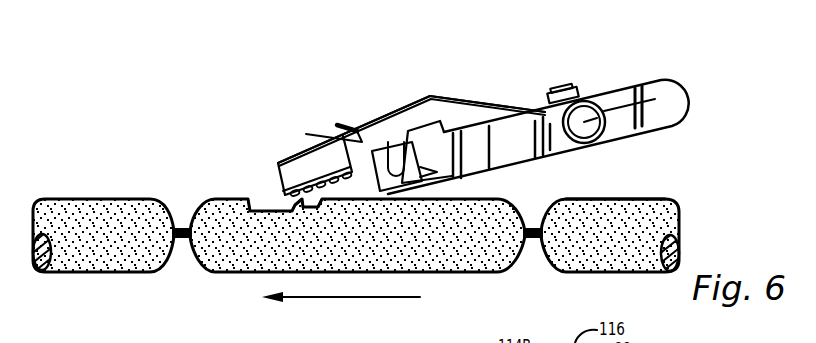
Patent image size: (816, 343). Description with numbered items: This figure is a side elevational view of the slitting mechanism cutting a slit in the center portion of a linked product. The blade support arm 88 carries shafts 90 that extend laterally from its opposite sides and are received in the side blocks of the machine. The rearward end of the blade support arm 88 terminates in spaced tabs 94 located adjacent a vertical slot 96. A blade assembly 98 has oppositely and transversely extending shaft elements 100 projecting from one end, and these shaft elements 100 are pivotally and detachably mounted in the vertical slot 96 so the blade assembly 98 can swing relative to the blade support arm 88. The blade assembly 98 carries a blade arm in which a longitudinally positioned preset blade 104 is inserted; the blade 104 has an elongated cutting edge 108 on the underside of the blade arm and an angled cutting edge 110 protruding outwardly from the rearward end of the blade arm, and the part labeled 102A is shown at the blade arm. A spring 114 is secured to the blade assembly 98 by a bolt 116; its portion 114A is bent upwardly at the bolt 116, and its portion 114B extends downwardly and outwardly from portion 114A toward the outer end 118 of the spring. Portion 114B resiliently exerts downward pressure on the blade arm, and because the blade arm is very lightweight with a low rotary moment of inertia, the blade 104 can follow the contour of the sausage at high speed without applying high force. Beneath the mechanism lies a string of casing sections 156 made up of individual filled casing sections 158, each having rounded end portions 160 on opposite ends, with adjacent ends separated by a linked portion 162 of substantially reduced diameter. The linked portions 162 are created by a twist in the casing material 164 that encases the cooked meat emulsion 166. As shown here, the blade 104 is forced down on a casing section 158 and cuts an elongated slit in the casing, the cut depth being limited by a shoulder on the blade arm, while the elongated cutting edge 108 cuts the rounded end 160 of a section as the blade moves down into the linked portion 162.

The blade support arm 88 is at (592, 86).
The shafts 90 is at (640, 95).
The spaced tabs 94 is at (305, 136).
The vertical slot 96 is at (384, 142).
The blade assembly 98 is at (274, 176).
The shaft elements 100 is at (393, 150).
The latch finger 102A is at (362, 126).
The preset blade 104 is at (273, 168).
The elongated cutting edge 108 is at (323, 177).
The angled cutting edge 110 is at (217, 198).
The spring 114 is at (446, 98).
The spring portion 114A is at (495, 104).
The spring portion 114B is at (400, 150).
The bolt 116 is at (565, 89).
The outer end of spring 118 is at (338, 122).
The string of casing sections 156 is at (570, 192).
The filled casing section 158 is at (592, 200).
The rounded end portions 160 is at (107, 198).
The linked portion 162 is at (173, 200).
The casing material 164 is at (312, 212).
The cooked meat emulsion 166 is at (299, 214).